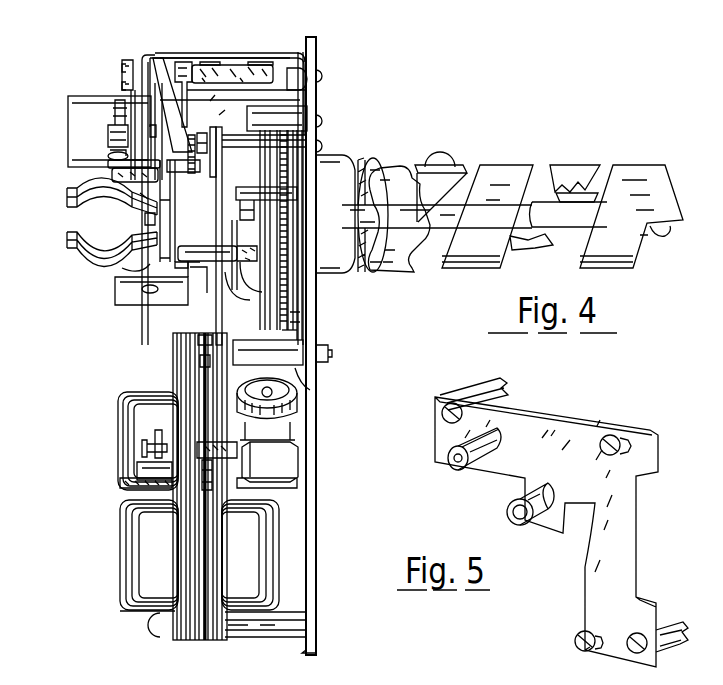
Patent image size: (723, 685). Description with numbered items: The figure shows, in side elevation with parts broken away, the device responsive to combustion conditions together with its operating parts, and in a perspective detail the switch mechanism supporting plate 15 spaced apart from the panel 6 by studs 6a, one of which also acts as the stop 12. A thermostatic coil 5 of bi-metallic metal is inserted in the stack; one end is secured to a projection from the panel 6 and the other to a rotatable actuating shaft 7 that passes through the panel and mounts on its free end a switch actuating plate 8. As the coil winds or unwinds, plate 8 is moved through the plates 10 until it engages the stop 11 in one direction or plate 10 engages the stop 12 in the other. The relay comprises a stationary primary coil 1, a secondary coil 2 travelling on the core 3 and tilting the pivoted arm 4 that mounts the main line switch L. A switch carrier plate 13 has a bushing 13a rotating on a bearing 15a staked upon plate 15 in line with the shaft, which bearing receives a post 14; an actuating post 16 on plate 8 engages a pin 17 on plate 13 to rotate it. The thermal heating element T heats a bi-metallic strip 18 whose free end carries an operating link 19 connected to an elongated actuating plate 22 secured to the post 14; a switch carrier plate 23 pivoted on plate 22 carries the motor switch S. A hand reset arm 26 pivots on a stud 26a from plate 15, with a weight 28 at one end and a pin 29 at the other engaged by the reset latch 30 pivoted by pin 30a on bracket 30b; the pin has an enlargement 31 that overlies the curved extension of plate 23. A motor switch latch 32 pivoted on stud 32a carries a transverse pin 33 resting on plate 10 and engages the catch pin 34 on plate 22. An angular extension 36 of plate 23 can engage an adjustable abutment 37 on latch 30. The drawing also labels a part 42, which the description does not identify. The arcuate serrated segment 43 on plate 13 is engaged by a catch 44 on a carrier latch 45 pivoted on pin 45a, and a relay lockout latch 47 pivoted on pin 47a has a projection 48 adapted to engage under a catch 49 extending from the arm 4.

In FIG. 4, the primary coil 1 is at (150, 583).
In FIG. 4, the secondary coil 2 is at (125, 455).
In FIG. 4, the core 3 is at (190, 640).
In FIG. 4, the pivoted arm 4 is at (140, 472).
In FIG. 4, the thermostatic coil 5 is at (480, 268).
In FIG. 4, the panel 6 is at (316, 570).
In FIG. 4, the studs 6a is at (307, 143).
In FIG. 5, the studs 6a is at (495, 388).
In FIG. 4, the actuating shaft 7 is at (428, 232).
In FIG. 4, the switch actuating plate 8 is at (284, 330).
In FIG. 4, the plates 10 is at (290, 322).
In FIG. 4, the stop 11 is at (300, 118).
In FIG. 4, the stop 12 is at (303, 380).
In FIG. 5, the stop 12 is at (670, 650).
In FIG. 4, the switch carrier plate 13 is at (188, 272).
In FIG. 4, the bushing 13a is at (140, 199).
In FIG. 4, the post 14 is at (145, 222).
In FIG. 4, the switch mechanism supporting plate 15 is at (218, 127).
In FIG. 5, the switch mechanism supporting plate 15 is at (585, 583).
In FIG. 5, the bearing 15a is at (528, 528).
In FIG. 4, the actuating post 16 is at (254, 268).
In FIG. 4, the pin 17 is at (195, 278).
In FIG. 4, the bi-metallic strip 18 is at (277, 62).
In FIG. 4, the operating link 19 is at (198, 128).
In FIG. 4, the actuating plate 22 is at (185, 277).
In FIG. 4, the switch carrier plate 23 is at (122, 268).
In FIG. 4, the hand reset arm 26 is at (140, 131).
In FIG. 4, the stud 26a is at (163, 157).
In FIG. 5, the stud 26a is at (452, 463).
In FIG. 4, the weight 28 is at (75, 101).
In FIG. 4, the pin 29 is at (110, 166).
In FIG. 4, the reset latch 30 is at (123, 62).
In FIG. 4, the pin 30a is at (122, 72).
In FIG. 4, the bracket 30b is at (200, 52).
In FIG. 4, the enlargement 31 is at (146, 54).
In FIG. 4, the motor switch latch 32 is at (241, 320).
In FIG. 4, the stud 32a is at (285, 350).
In FIG. 4, the transverse pin 33 is at (253, 187).
In FIG. 4, the motor switch latch catch pin 34 is at (260, 290).
In FIG. 4, the angular extension 36 is at (114, 180).
In FIG. 4, the adjustable abutment 37 is at (118, 160).
In FIG. 4, the lever 42 is at (170, 85).
In FIG. 4, the arcuate serrated segment 43 is at (213, 125).
In FIG. 4, the catch 44 is at (205, 38).
In FIG. 4, the carrier latch 45 is at (200, 303).
In FIG. 5, the pin 45a is at (607, 435).
In FIG. 4, the relay lockout latch 47 is at (182, 333).
In FIG. 4, the pin 47a is at (205, 364).
In FIG. 5, the pin 47a is at (575, 640).
In FIG. 4, the projection 48 is at (205, 490).
In FIG. 4, the catch 49 is at (200, 442).
In FIG. 4, the main line switch L is at (292, 415).
In FIG. 4, the thermal heating element T is at (278, 80).
In FIG. 4, the motor switch S is at (66, 248).